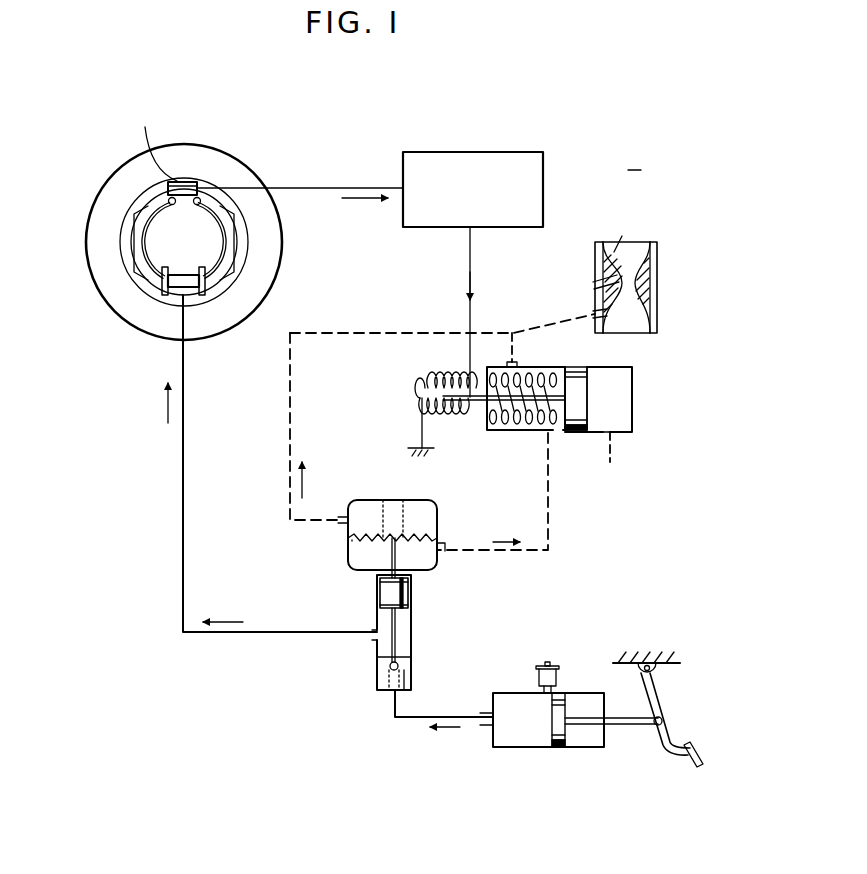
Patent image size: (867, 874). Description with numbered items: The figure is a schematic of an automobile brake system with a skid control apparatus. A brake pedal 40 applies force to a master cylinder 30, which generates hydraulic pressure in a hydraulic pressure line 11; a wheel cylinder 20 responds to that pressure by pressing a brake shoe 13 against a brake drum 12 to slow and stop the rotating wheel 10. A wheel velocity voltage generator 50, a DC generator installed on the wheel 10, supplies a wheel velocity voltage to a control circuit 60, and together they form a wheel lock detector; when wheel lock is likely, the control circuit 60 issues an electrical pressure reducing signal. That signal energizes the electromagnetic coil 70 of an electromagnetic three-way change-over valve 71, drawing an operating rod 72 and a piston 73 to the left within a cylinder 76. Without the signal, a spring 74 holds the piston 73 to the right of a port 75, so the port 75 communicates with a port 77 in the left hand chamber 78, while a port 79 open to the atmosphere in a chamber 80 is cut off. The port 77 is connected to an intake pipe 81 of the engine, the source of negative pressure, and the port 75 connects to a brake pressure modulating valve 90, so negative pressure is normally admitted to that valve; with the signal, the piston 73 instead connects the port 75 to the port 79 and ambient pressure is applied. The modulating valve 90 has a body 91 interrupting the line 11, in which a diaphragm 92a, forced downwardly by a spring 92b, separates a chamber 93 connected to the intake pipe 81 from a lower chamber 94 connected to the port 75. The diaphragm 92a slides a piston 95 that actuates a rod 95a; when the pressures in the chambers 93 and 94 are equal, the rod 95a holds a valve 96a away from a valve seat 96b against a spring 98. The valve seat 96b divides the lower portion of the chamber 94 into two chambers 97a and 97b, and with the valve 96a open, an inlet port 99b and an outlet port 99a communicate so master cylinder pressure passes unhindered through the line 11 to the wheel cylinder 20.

The wheel 10 is at (85, 197).
The hydraulic pressure line 11 is at (182, 483).
The brake drum 12 is at (253, 247).
The brake shoe 13 is at (231, 240).
The wheel cylinder 20 is at (161, 293).
The wheel velocity voltage generator 50 is at (196, 181).
The control circuit 60 is at (427, 152).
The electromagnetic coil 70 is at (431, 388).
The electromagnetic three-way change-over valve 71 is at (620, 502).
The operating rod 72 is at (478, 402).
The piston 73 is at (580, 367).
The spring 74 is at (505, 367).
The port 75 is at (556, 436).
The cylinder 76 is at (633, 372).
The port 77 is at (517, 364).
The left hand chamber 78 is at (517, 430).
The port 79 is at (613, 437).
The chamber 80 is at (613, 407).
The intake pipe 81 is at (603, 251).
The brake pressure modulating valve 90 is at (401, 598).
The body 91 is at (437, 517).
The diaphragm 92a is at (352, 540).
The spring 92b is at (413, 500).
The chamber 93 is at (360, 508).
The lower chamber 94 is at (358, 557).
The piston 95 is at (402, 593).
The rod 95a is at (398, 628).
The valve 96a is at (398, 667).
The valve seat 96b is at (385, 655).
The chamber 97a is at (373, 587).
The chamber 97b is at (377, 680).
The spring 98 is at (404, 683).
The outlet port 99a is at (373, 630).
The inlet port 99b is at (387, 693).
The master cylinder 30 is at (522, 747).
The brake pedal 40 is at (656, 690).